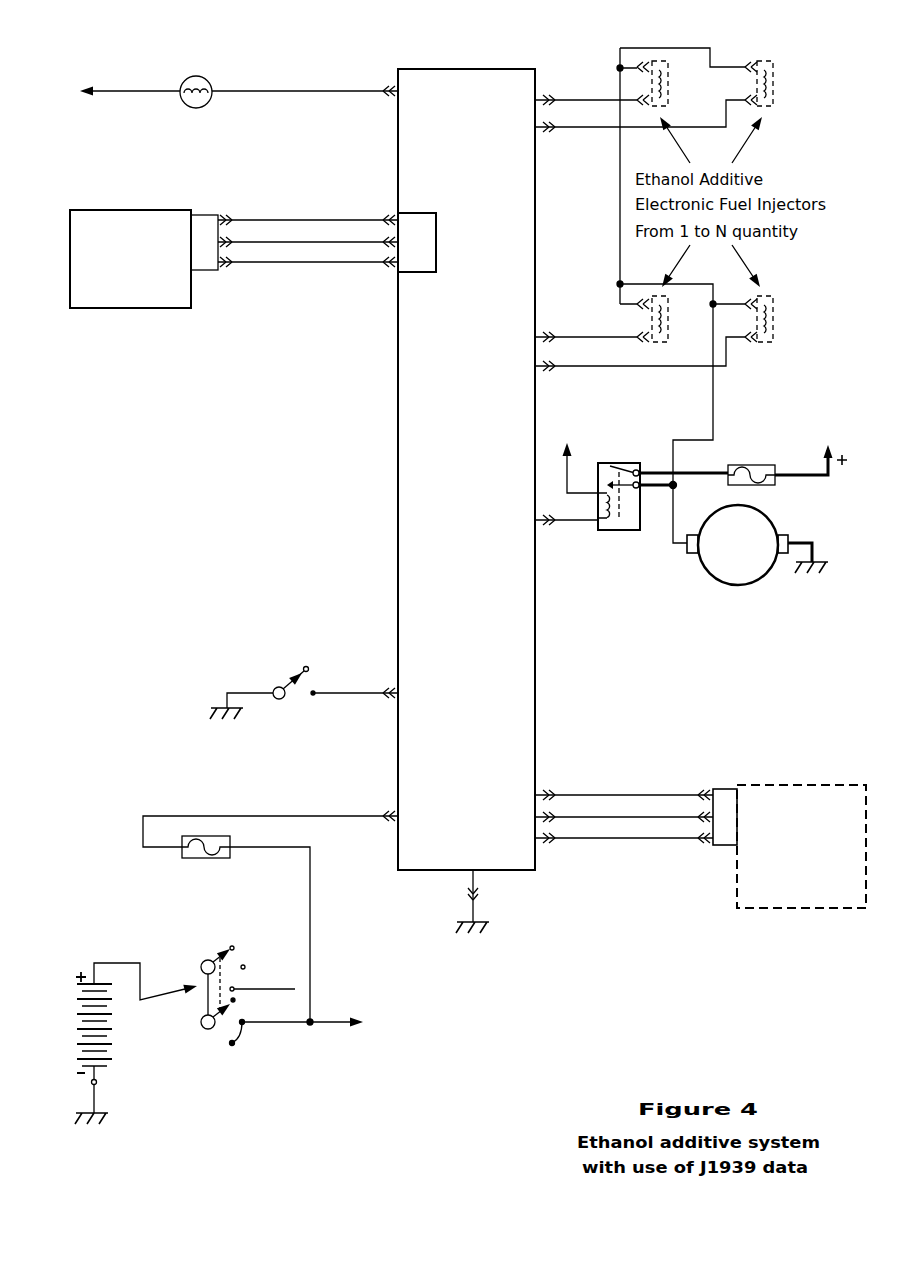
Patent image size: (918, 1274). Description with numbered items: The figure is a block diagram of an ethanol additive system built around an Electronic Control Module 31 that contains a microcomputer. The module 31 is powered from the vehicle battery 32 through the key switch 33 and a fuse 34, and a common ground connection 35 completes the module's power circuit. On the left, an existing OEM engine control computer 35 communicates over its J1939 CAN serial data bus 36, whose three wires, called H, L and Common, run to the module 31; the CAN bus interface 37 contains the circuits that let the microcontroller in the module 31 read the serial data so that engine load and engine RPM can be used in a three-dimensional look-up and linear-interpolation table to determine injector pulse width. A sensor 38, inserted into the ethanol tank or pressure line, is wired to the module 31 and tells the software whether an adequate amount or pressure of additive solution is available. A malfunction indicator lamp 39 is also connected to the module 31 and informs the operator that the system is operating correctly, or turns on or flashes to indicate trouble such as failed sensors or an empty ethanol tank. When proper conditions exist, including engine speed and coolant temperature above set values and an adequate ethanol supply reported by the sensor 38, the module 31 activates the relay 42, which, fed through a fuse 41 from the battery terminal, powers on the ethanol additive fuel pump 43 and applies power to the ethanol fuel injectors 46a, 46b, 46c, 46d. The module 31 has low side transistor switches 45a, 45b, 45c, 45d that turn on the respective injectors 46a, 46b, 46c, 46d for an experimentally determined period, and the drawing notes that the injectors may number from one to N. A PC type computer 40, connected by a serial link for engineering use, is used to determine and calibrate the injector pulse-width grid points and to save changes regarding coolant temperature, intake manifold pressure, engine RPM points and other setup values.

The electronic control module 31 is at (482, 295).
The vehicle battery 32 is at (143, 1042).
The key switch 33 is at (237, 1097).
The fuse 34 is at (218, 908).
The common ground connection / OEM engine control computer / J1939 bus wires 35 is at (147, 342).
The J1939 CAN serial data bus 36 is at (355, 292).
The CAN bus 37 is at (428, 255).
The sensor 38 is at (306, 730).
The malfunction indicator lamp 39 is at (222, 27).
The PC type computer 40 is at (812, 850).
The fuse 41 is at (804, 503).
The relay 42 is at (620, 578).
The ethanol additive fuel pump 43 is at (749, 610).
The low side transistor switch 45a is at (531, 109).
The low side transistor switch 45b is at (531, 136).
The low side transistor switch 45c is at (531, 347).
The low side transistor switch 45d is at (531, 375).
The ethanol fuel injector 46a is at (707, 95).
The ethanol fuel injector 46b is at (814, 95).
The ethanol fuel injector 46c is at (707, 331).
The ethanol fuel injector 46d is at (814, 331).